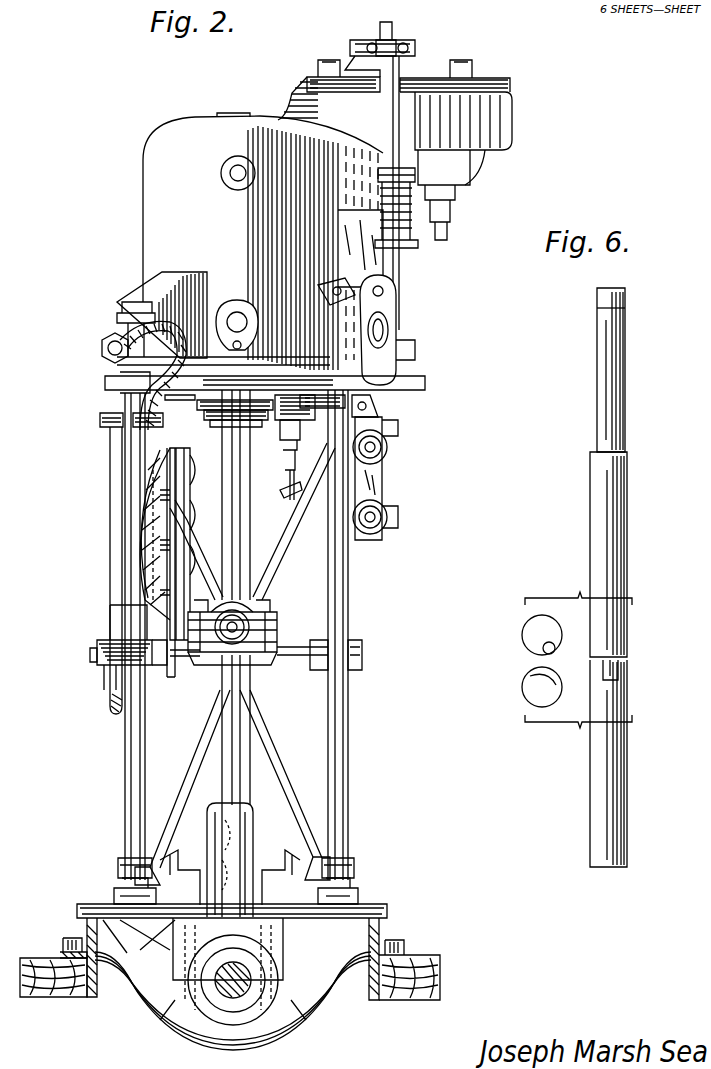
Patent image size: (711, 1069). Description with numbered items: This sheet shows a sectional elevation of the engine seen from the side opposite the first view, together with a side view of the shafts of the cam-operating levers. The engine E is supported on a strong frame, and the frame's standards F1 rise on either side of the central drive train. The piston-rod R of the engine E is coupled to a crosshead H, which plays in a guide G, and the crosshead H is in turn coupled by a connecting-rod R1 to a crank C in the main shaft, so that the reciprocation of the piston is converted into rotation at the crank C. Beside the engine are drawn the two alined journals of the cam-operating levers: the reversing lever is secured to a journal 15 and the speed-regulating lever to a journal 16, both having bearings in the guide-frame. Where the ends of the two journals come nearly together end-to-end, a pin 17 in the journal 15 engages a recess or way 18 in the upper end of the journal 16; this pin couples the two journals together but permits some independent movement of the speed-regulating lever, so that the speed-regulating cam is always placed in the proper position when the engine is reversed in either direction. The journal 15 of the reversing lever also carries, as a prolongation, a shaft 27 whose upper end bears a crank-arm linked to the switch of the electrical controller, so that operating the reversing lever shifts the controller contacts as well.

In FIG. 2, the engine E is at (263, 223).
In FIG. 2, the guide G is at (185, 498).
In FIG. 2, the piston-rod R is at (250, 522).
In FIG. 2, the connecting-rod R1 is at (245, 756).
In FIG. 2, the crosshead H is at (190, 676).
In FIG. 2, the standard posts F1 is at (124, 792).
In FIG. 2, the crank C is at (250, 975).
In FIG. 6, the shaft 27 is at (625, 428).
In FIG. 6, the journal 15 is at (628, 560).
In FIG. 6, the journal 16 is at (628, 805).
In FIG. 6, the pin 17 is at (555, 652).
In FIG. 6, the recess or way 18 is at (556, 685).